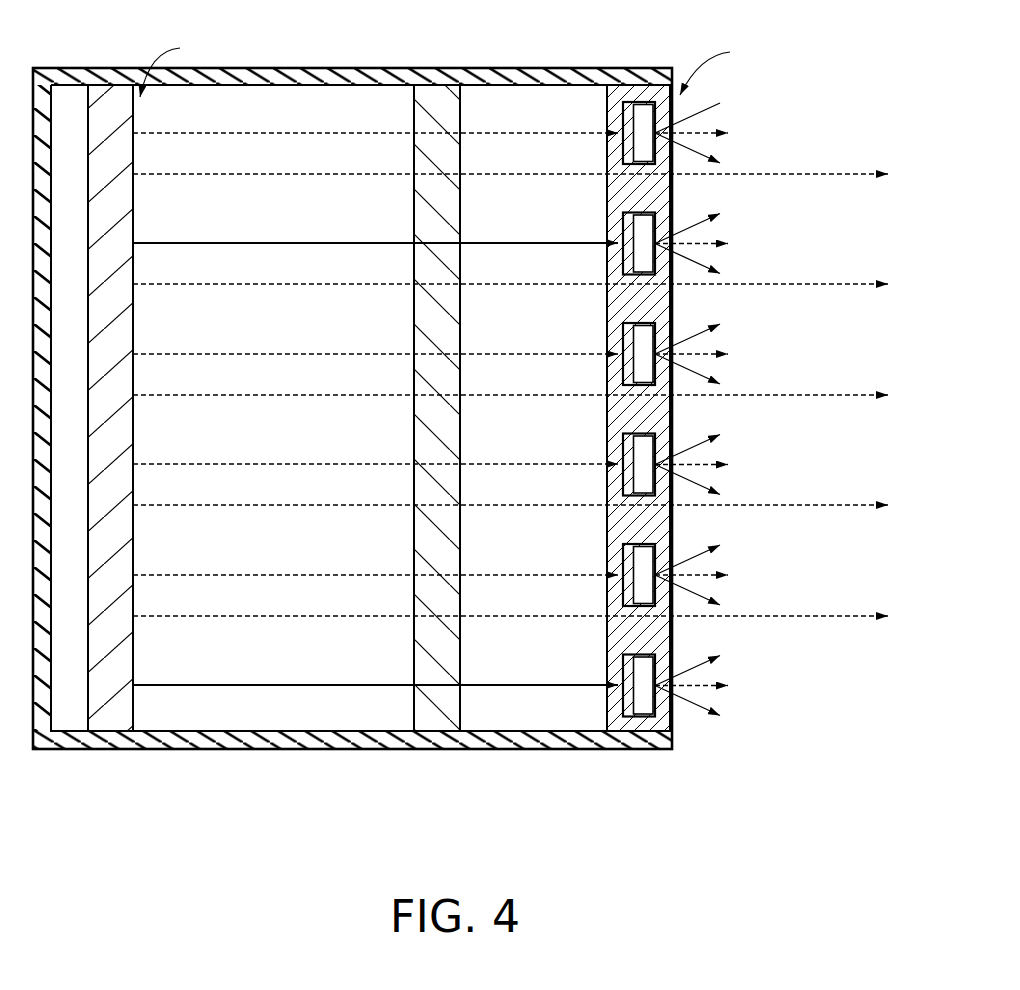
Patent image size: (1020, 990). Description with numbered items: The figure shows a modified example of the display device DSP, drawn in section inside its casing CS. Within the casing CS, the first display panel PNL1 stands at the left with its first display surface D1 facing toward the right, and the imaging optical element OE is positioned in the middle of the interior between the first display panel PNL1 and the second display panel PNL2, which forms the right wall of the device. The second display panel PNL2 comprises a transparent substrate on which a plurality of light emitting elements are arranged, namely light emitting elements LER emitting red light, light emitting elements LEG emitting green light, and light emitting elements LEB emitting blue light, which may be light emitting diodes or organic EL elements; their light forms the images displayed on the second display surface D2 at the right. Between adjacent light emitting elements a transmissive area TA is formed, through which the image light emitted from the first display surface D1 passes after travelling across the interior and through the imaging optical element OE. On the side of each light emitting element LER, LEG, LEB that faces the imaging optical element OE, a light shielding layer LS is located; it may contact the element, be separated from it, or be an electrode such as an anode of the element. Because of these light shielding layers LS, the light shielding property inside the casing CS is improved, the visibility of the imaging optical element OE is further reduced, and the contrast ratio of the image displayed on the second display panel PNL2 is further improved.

The first display panel PNL1 is at (105, 95).
The first display surface D1 is at (180, 63).
The imaging optical element OE is at (434, 95).
The second display panel PNL2 is at (627, 98).
The second display surface D2 is at (725, 66).
The light shielding layer LS is at (626, 104).
The light emitting element emitting red light LER is at (640, 156).
The light emitting element emitting green light LEG is at (588, 415).
The light emitting element emitting blue light LEB is at (588, 525).
The transmissive area TA is at (672, 167).
The casing CS is at (82, 750).
The display device DSP is at (460, 441).